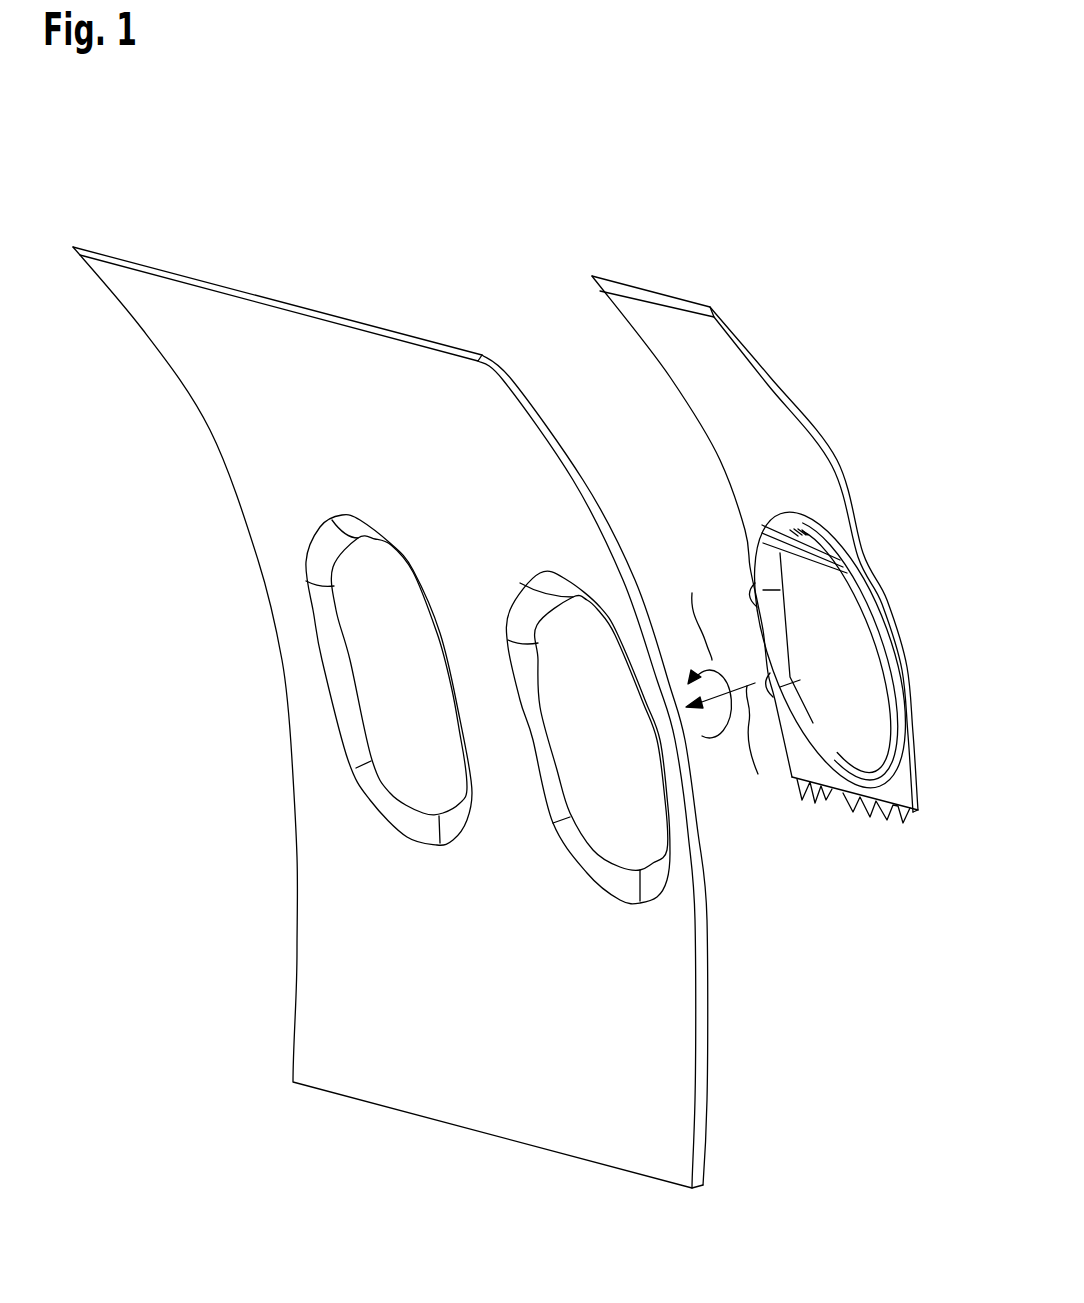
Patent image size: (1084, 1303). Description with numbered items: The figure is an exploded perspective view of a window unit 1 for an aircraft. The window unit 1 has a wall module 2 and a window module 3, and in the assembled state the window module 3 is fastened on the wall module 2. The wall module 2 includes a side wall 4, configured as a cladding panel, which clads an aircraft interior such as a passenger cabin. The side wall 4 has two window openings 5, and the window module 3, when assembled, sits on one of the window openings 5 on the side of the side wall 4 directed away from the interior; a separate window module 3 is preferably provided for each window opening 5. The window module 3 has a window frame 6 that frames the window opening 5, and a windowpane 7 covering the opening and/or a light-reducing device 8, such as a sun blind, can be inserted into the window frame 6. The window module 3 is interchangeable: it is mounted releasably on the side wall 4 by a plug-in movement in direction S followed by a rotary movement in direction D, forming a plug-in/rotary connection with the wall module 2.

The window unit 1 is at (547, 180).
The wall module 2 is at (257, 764).
The window module 3 is at (873, 481).
The side wall 4 is at (675, 1128).
The window opening 5 is at (391, 650).
The window frame 6 is at (754, 522).
The windowpane 7 is at (837, 630).
The light-reducing device 8 is at (840, 650).